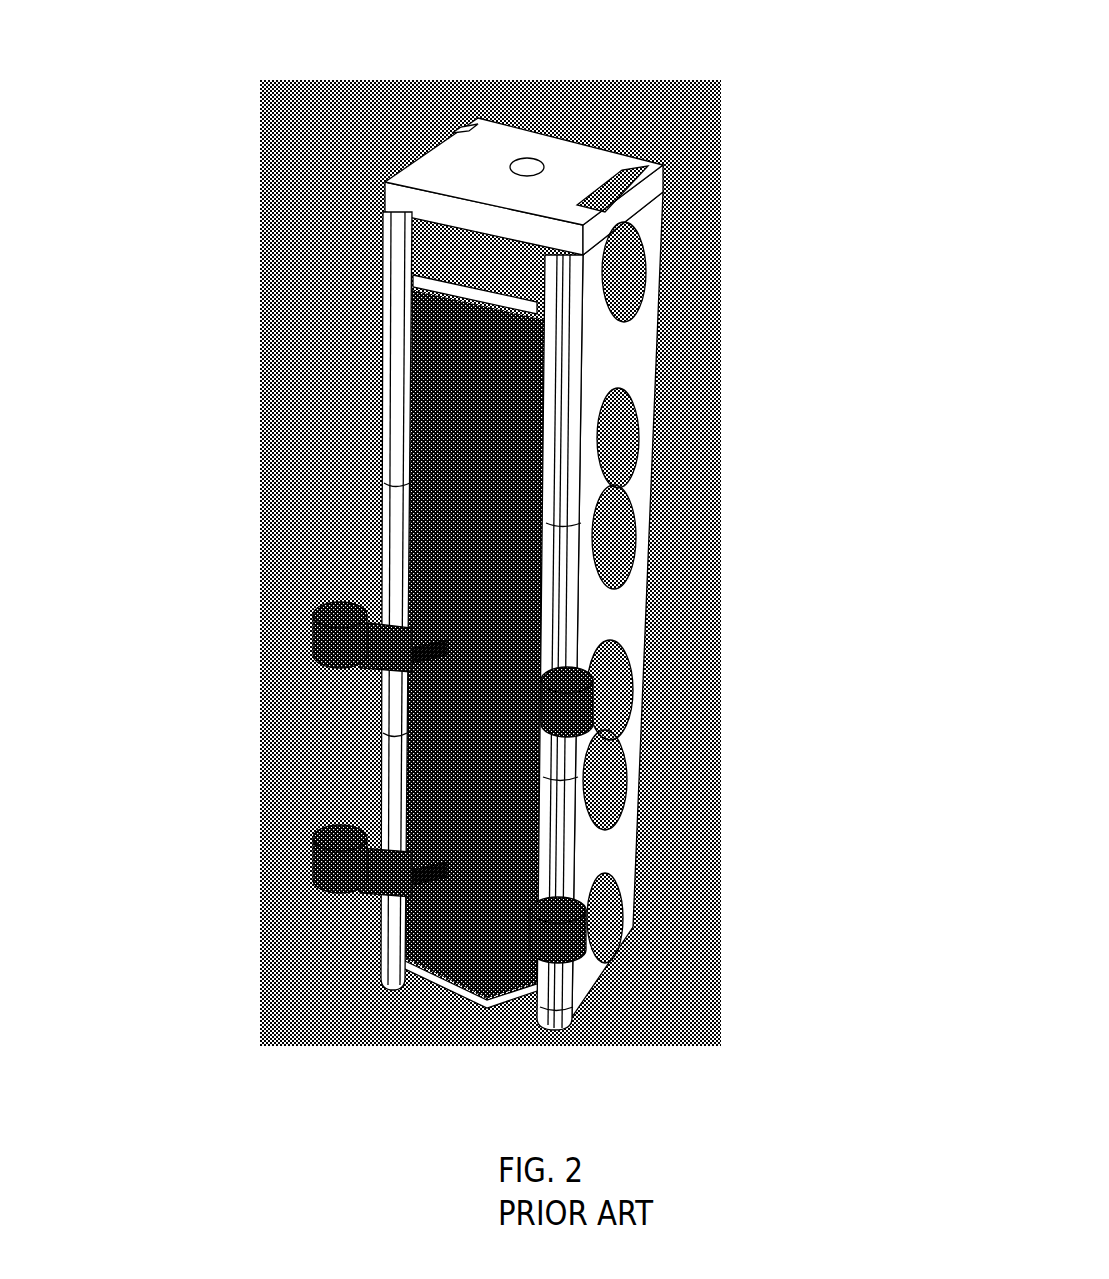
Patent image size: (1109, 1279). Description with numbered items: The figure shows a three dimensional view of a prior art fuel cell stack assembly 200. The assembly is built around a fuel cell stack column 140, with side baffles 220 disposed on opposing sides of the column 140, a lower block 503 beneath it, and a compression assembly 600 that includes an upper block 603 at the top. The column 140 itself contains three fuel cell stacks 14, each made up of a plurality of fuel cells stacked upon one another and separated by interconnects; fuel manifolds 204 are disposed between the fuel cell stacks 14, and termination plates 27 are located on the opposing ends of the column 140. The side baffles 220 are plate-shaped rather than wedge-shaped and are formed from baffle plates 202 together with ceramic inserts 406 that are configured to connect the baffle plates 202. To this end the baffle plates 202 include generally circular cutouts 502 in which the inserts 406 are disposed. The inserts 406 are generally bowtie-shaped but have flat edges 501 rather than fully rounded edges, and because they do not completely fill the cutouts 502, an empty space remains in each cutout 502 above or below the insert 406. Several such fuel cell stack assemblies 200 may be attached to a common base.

The fuel cell stack assembly 200 is at (528, 25).
The upper block 603 is at (572, 158).
The compression assembly 600 is at (367, 197).
The flat edges 501 is at (618, 198).
The circular cutouts 502 is at (618, 301).
The termination plates 27 is at (487, 308).
The fuel cell stacks 14 is at (470, 368).
The ceramic inserts 406 is at (619, 463).
The baffle plates 202 is at (634, 593).
The side baffles 220 is at (842, 435).
The fuel cell stack column 140 is at (173, 225).
The fuel manifolds 204 is at (356, 668).
The lower block 503 is at (619, 947).